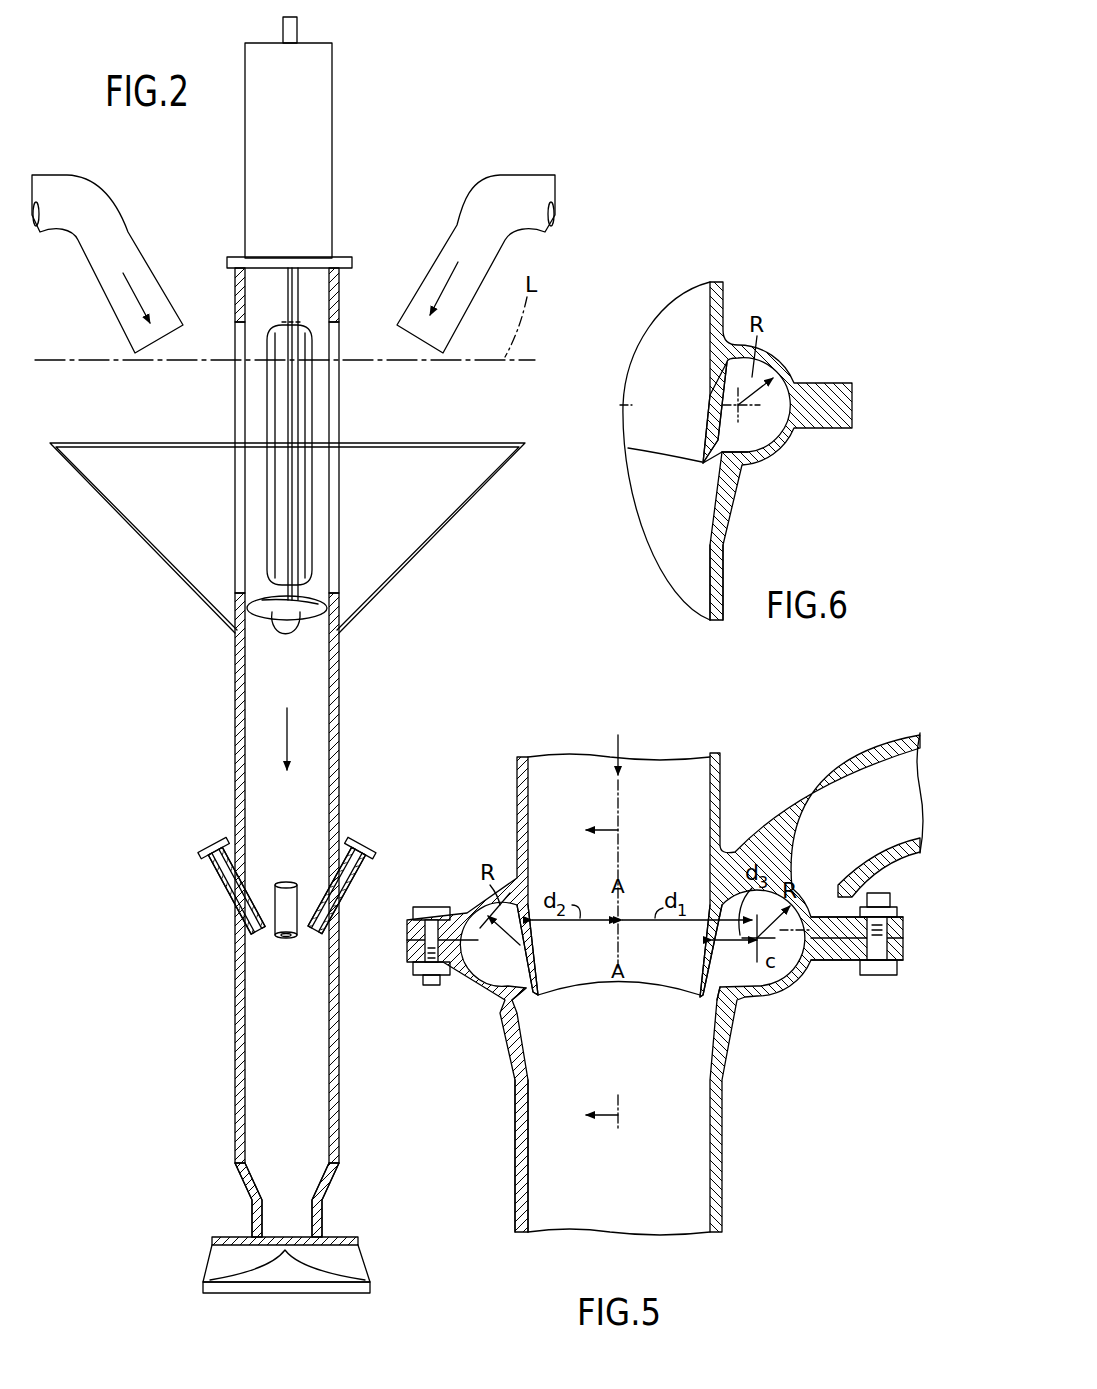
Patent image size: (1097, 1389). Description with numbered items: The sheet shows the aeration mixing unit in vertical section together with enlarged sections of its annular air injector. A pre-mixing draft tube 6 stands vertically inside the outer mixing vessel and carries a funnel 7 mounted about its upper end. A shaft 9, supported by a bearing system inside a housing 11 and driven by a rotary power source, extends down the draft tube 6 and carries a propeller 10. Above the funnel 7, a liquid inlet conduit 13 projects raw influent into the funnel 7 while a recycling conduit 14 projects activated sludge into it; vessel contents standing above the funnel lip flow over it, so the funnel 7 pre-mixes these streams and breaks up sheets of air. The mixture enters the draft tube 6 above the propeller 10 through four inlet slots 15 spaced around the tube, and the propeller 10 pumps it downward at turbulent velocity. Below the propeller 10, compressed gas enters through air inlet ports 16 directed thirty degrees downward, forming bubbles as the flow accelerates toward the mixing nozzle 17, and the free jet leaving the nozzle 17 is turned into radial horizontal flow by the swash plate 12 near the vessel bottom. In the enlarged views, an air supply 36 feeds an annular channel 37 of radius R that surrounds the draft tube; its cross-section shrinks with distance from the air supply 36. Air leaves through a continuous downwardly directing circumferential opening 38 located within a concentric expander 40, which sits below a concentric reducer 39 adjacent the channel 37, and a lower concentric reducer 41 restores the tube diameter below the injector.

In FIG. 2, the pre-mixing draft tube 6 is at (340, 718).
In FIG. 5, the pre-mixing draft tube 6 is at (613, 974).
In FIG. 2, the funnel 7 is at (462, 510).
In FIG. 2, the shaft 9 is at (297, 28).
In FIG. 2, the propeller 10 is at (318, 602).
In FIG. 2, the housing 11 is at (325, 76).
In FIG. 2, the swash plate 12 is at (340, 1262).
In FIG. 2, the liquid inlet conduit 13 is at (457, 220).
In FIG. 2, the recycling conduit 14 is at (120, 228).
In FIG. 2, the inlet slots 15 is at (240, 378).
In FIG. 2, the air inlet ports 16 is at (213, 877).
In FIG. 2, the mixing nozzle 17 is at (330, 1192).
In FIG. 5, the air supply 36 is at (847, 830).
In FIG. 6, the annular channel 37 is at (778, 455).
In FIG. 5, the annular channel 37 is at (782, 992).
In FIG. 6, the circumferential opening 38 is at (705, 467).
In FIG. 5, the circumferential opening 38 is at (703, 997).
In FIG. 6, the concentric reducer 39 is at (706, 418).
In FIG. 5, the concentric reducer 39 is at (538, 966).
In FIG. 6, the concentric expander 40 is at (740, 488).
In FIG. 5, the concentric expander 40 is at (518, 1005).
In FIG. 6, the concentric reducer 41 is at (712, 540).
In FIG. 5, the concentric reducer 41 is at (530, 1062).